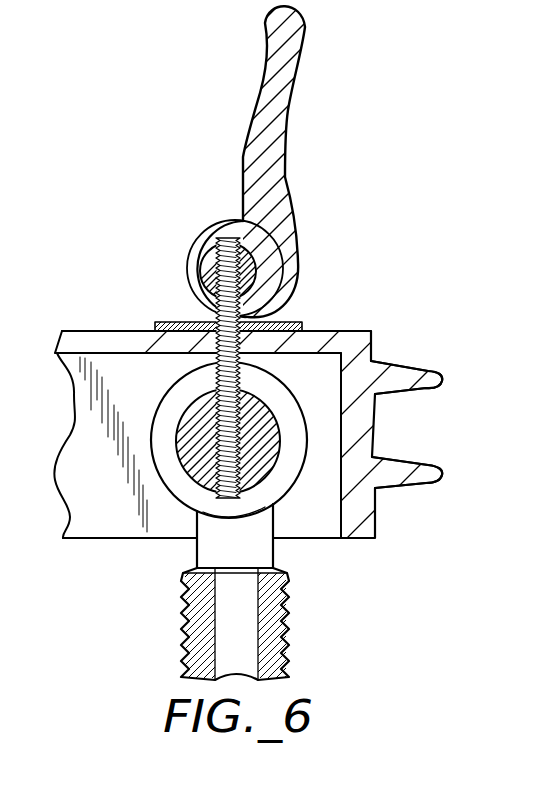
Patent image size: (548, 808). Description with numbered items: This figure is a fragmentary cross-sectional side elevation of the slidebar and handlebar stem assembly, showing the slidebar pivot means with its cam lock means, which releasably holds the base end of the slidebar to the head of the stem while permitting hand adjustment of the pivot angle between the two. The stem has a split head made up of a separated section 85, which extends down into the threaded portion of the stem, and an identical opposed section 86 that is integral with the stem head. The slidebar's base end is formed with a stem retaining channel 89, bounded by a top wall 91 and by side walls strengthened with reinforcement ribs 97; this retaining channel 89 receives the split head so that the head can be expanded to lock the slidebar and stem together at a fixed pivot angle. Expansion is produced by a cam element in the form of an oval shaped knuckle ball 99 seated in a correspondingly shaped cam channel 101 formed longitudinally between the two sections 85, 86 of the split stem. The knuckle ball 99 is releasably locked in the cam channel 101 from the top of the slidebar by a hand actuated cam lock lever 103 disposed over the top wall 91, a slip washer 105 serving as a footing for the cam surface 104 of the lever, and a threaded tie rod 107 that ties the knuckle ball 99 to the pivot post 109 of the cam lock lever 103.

The separated section 85 is at (373, 408).
The opposed section 86 is at (263, 550).
The stem retaining channel 89 is at (318, 365).
The top wall 91 is at (363, 345).
The reinforcement ribs 97 is at (430, 363).
The knuckle ball 99 is at (196, 474).
The cam channel 101 is at (258, 500).
The cam lock lever 103 is at (248, 172).
The cam surface 104 is at (303, 300).
The slip washer 105 is at (180, 322).
The threaded tie rod 107 is at (145, 340).
The pivot post 109 is at (254, 270).